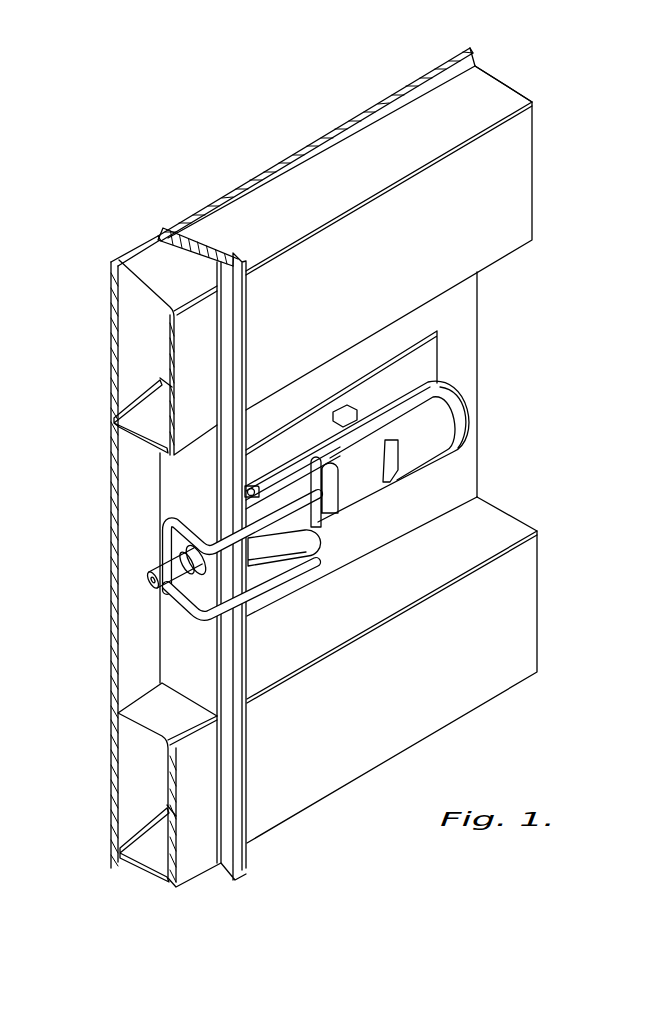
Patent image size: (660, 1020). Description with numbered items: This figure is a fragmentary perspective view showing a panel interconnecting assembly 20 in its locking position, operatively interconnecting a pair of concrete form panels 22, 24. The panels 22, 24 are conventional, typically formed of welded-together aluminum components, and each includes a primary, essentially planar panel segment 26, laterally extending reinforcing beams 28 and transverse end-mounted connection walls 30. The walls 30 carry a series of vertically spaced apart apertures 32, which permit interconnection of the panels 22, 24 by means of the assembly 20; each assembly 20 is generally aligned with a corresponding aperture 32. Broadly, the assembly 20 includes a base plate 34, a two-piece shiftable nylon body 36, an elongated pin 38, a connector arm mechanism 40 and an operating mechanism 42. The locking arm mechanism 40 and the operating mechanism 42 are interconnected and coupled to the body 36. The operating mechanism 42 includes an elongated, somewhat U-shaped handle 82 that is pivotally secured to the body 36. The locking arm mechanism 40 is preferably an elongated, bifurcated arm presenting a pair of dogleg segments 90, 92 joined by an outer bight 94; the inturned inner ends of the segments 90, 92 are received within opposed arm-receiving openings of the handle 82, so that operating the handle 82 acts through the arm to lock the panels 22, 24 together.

The panel interconnecting assembly 20 is at (578, 340).
The panel 22 is at (348, 104).
The panel 24 is at (128, 238).
The panel segment 26 is at (460, 488).
The reinforcing beams 28 is at (140, 285).
The connection walls 30 is at (243, 853).
The apertures 32 is at (208, 551).
The base plate 34 is at (458, 340).
The shiftable nylon body 36 is at (388, 394).
The pin 38 is at (147, 588).
The connector arm mechanism 40 is at (203, 640).
The operating mechanism 42 is at (477, 388).
The handle 82 is at (472, 428).
The dogleg segment 90 is at (250, 526).
The dogleg segment 92 is at (302, 574).
The outer bight 94 is at (165, 546).